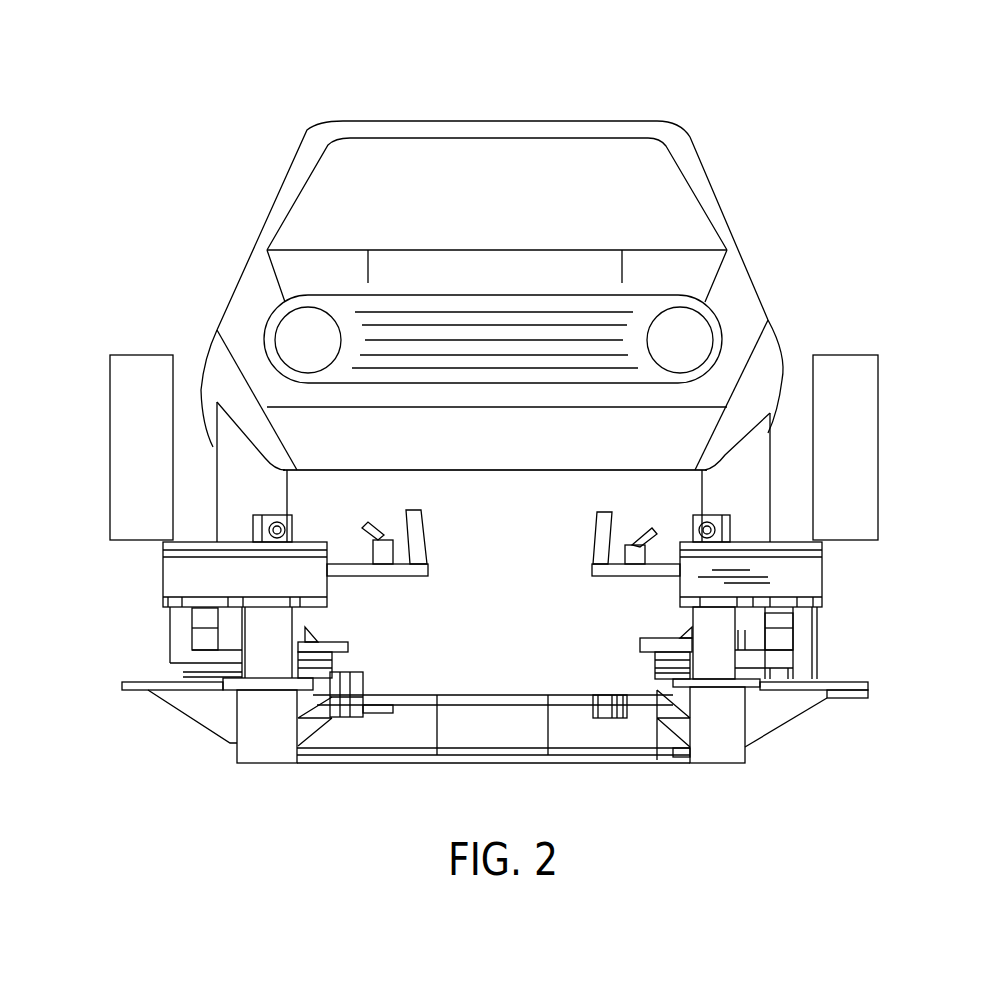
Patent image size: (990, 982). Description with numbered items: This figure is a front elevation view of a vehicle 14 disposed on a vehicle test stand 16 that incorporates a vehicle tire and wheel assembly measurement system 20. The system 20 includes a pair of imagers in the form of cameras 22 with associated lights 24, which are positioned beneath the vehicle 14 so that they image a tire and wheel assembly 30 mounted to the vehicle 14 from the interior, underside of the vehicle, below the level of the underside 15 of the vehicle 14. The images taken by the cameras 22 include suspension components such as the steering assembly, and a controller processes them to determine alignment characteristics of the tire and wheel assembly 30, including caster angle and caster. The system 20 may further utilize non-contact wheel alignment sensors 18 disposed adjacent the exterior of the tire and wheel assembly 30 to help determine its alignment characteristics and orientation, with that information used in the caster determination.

The vehicle 14 is at (693, 137).
The underside 15 is at (533, 470).
The vehicle test stand 16 is at (200, 578).
The non-contact wheel alignment sensors 18 is at (108, 395).
The vehicle tire and wheel assembly measurement system 20 is at (388, 576).
The cameras 22 is at (377, 535).
The lights 24 is at (423, 533).
The tire and wheel assembly 30 is at (215, 447).